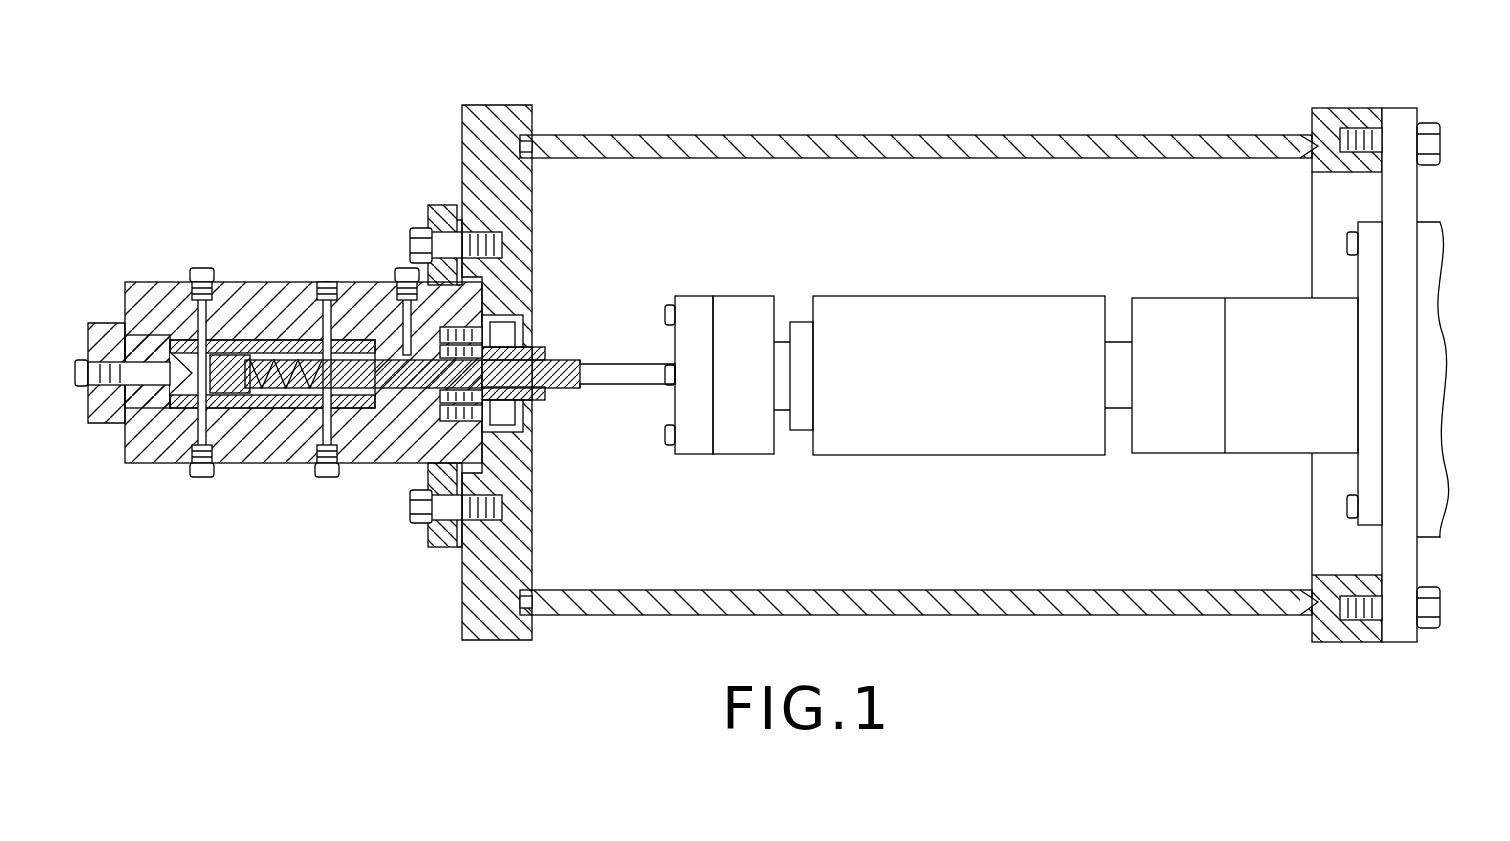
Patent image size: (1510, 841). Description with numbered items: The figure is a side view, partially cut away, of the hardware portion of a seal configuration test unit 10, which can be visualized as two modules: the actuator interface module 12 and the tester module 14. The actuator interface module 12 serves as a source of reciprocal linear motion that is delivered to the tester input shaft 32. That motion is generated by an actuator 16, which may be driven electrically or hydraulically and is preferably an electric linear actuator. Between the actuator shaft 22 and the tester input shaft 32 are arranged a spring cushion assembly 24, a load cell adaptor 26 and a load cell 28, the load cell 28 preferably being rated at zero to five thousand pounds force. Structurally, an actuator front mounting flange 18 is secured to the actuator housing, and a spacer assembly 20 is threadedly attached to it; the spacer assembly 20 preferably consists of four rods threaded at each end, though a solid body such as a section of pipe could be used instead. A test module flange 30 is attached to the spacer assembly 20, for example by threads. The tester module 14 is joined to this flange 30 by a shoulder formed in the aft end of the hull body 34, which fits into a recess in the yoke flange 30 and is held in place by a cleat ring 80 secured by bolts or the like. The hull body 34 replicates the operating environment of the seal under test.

The seal configuration test unit 10 is at (517, 93).
The actuator interface module 12 is at (774, 102).
The tester module 14 is at (260, 213).
The actuator 16 is at (1445, 250).
The actuator front mounting flange 18 is at (1400, 106).
The spacer assembly 20 is at (890, 133).
The actuator shaft 22 is at (1133, 297).
The spring cushion assembly 24 is at (930, 455).
The load cell adaptor 26 is at (745, 455).
The load cell 28 is at (692, 455).
The test module flange 30 is at (533, 572).
The tester input shaft 32 is at (570, 358).
The hull body 34 is at (365, 282).
The cleat ring 80 is at (438, 205).